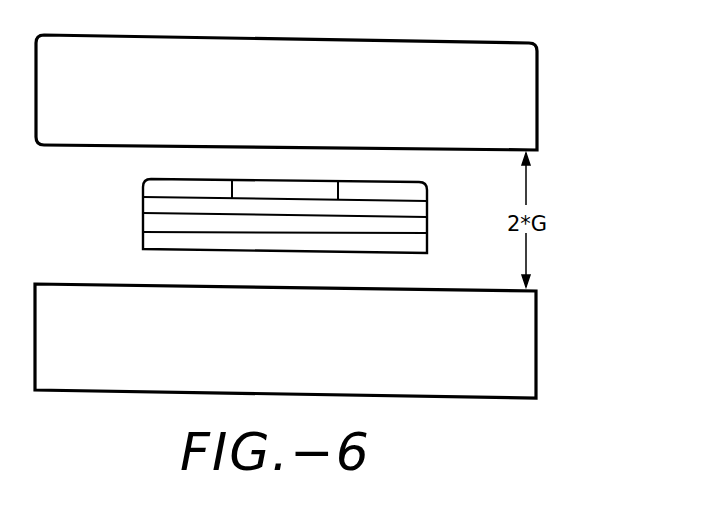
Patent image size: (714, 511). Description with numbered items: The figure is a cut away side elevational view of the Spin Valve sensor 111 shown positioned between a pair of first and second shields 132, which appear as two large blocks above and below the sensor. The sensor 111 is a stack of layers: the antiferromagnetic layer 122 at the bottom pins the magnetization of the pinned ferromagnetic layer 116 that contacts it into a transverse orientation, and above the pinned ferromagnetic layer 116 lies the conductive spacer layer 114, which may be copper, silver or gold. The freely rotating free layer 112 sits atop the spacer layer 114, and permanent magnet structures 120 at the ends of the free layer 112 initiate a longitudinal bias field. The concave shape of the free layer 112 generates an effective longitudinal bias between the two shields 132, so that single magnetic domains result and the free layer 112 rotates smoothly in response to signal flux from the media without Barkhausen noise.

The shields 132 is at (530, 75).
The Spin Valve sensor 111 is at (127, 212).
The permanent magnet structures 120 is at (183, 184).
The free layer 112 is at (275, 184).
The conductive spacer layer 114 is at (428, 211).
The pinned ferromagnetic layer 116 is at (428, 230).
The antiferromagnetic layer 122 is at (428, 247).